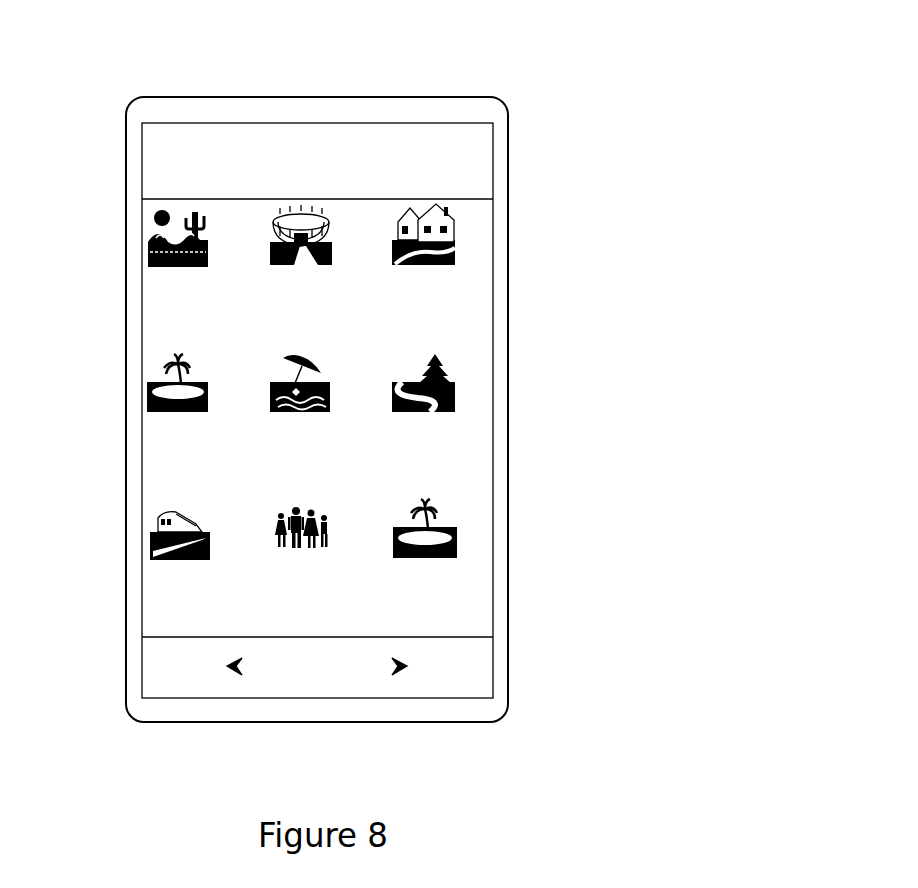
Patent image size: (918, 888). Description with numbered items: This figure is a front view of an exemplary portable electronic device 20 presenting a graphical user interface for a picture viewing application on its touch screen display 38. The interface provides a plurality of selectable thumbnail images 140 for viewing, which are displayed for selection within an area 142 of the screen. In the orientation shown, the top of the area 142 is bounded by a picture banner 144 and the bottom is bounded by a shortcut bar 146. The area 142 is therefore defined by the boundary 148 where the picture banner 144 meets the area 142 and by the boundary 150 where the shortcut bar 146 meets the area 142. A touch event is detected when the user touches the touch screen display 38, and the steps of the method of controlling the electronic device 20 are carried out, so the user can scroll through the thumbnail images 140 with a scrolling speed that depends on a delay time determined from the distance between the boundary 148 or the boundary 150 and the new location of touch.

The portable electronic device 20 is at (531, 76).
The touch screen display 38 is at (474, 323).
The picture banner 144 is at (478, 142).
The boundary 148 is at (477, 198).
The area 142 is at (472, 240).
The thumbnail images 140 is at (153, 542).
The boundary 150 is at (477, 638).
The shortcut bar 146 is at (482, 679).